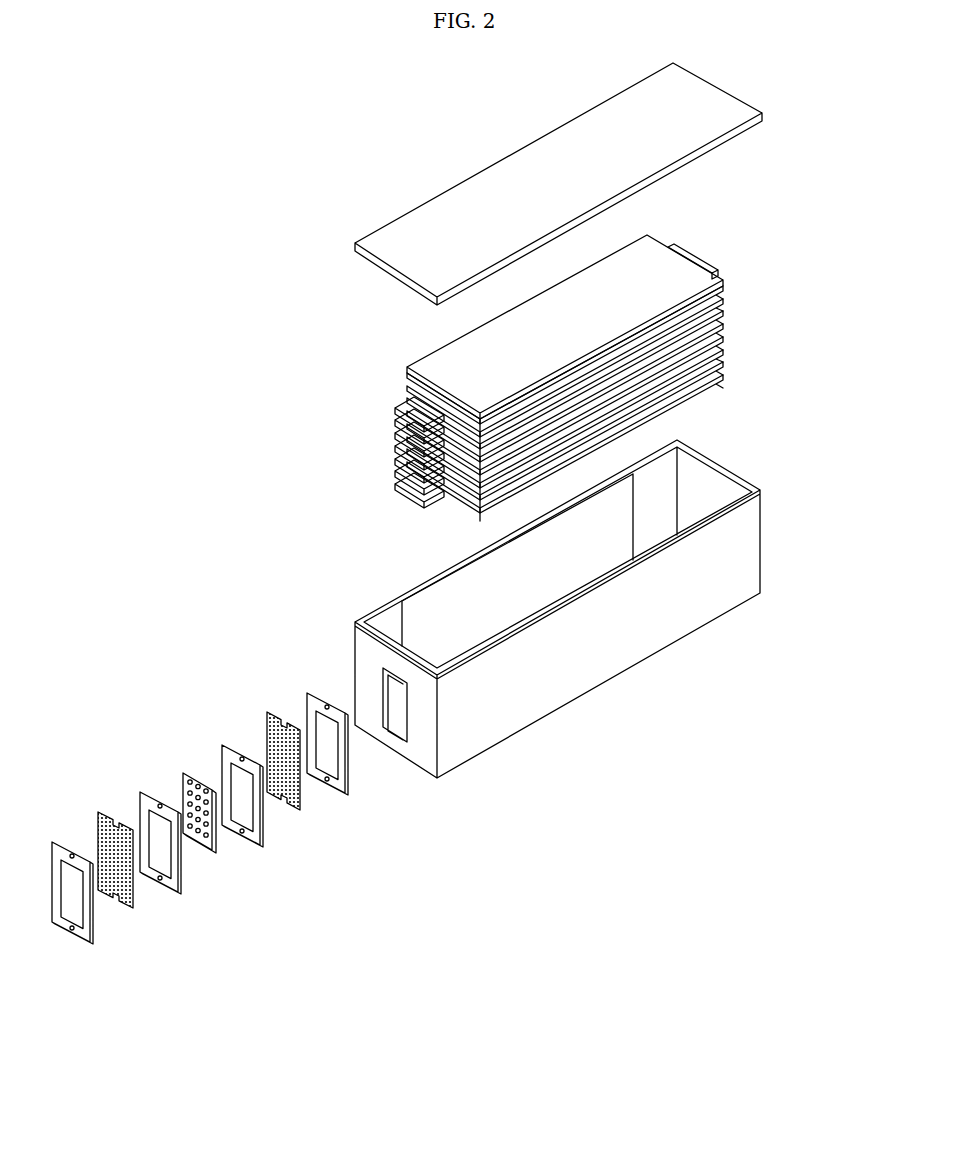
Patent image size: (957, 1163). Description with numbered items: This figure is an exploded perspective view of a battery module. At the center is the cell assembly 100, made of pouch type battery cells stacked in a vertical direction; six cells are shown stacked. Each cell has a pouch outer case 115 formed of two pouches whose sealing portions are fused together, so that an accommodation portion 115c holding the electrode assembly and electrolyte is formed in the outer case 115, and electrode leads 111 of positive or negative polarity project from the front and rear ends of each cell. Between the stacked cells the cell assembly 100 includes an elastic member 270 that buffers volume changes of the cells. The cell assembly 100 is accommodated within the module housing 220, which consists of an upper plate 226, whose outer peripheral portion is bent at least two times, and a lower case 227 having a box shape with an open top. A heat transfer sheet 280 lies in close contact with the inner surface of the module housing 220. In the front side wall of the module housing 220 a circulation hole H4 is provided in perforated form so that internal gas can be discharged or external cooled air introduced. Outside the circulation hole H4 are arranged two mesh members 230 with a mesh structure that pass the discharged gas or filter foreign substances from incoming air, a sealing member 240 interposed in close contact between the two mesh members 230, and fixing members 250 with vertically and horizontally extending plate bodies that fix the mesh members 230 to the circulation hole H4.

The cell assembly 100 is at (553, 365).
The electrode leads 111 is at (698, 262).
The pouch outer case 115 is at (400, 392).
The accommodation portion 115c is at (405, 378).
The module housing 220 is at (815, 78).
The upper plate 226 is at (752, 104).
The lower case 227 is at (560, 609).
The mesh member 230 is at (102, 811).
The sealing member 240 is at (213, 852).
The fixing member 250 is at (91, 945).
The elastic member 270 is at (437, 362).
The heat transfer sheet 280 is at (430, 610).
The circulation hole H4 is at (390, 688).